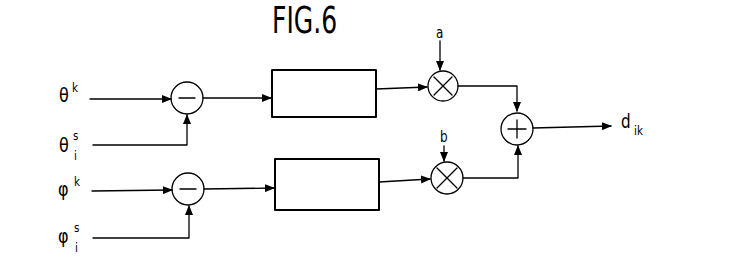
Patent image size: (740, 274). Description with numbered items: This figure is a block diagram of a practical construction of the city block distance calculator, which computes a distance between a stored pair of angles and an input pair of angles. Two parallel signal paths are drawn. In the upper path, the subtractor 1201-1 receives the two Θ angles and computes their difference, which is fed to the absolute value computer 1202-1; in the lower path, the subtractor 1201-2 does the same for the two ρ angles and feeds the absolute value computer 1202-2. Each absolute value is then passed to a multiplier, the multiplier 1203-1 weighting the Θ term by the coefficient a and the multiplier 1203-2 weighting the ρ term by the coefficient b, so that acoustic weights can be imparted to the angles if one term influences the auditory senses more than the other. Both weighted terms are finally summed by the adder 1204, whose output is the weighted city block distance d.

The subtractor 1201-1 is at (201, 65).
The subtractor 1201-2 is at (199, 203).
The absolute value computer 1202-1 is at (335, 70).
The absolute value computer 1202-2 is at (345, 210).
The multiplier 1203-1 is at (455, 76).
The multiplier 1203-2 is at (458, 190).
The adder 1204 is at (528, 116).